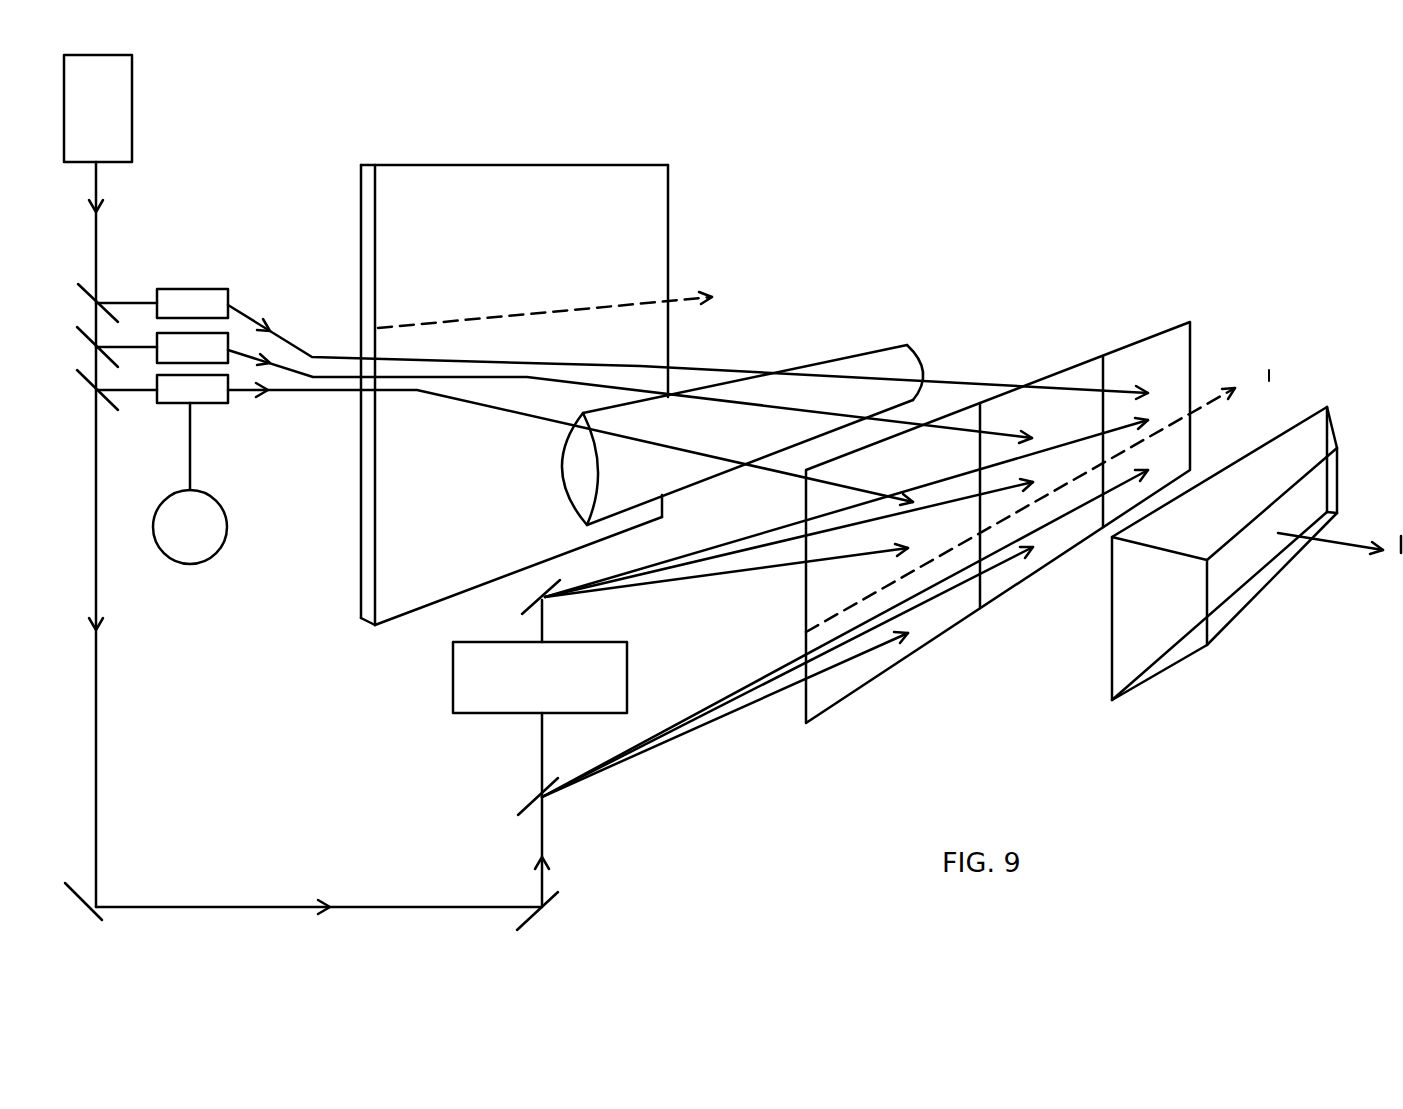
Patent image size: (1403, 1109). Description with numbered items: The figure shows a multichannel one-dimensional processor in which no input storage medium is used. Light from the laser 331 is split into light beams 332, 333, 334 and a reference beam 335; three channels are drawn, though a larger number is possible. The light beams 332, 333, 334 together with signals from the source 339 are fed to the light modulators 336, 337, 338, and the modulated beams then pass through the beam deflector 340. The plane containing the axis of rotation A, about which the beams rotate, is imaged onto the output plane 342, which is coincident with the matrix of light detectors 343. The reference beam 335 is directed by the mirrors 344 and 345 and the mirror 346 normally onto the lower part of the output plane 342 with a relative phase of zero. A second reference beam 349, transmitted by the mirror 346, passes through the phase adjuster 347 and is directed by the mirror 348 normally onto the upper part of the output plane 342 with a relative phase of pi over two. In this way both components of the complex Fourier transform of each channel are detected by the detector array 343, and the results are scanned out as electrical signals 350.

The laser 331 is at (132, 108).
The light beam 332 is at (96, 302).
The light beam 333 is at (96, 346).
The light beam 334 is at (96, 389).
The reference beam 335 is at (97, 703).
The light modulator 336 is at (622, 344).
The light modulator 337 is at (564, 388).
The light modulator 338 is at (504, 440).
The source 339 is at (190, 483).
The beam deflector 340 is at (668, 190).
The output plane 342 is at (830, 703).
The matrix of light detectors 343 is at (1244, 529).
The mirror 344 is at (102, 918).
The mirror 345 is at (532, 920).
The mirror 346 is at (530, 802).
The phase adjuster 347 is at (453, 690).
The mirror 348 is at (532, 600).
The reference beam 349 is at (542, 623).
The electrical signals 350 is at (1339, 563).